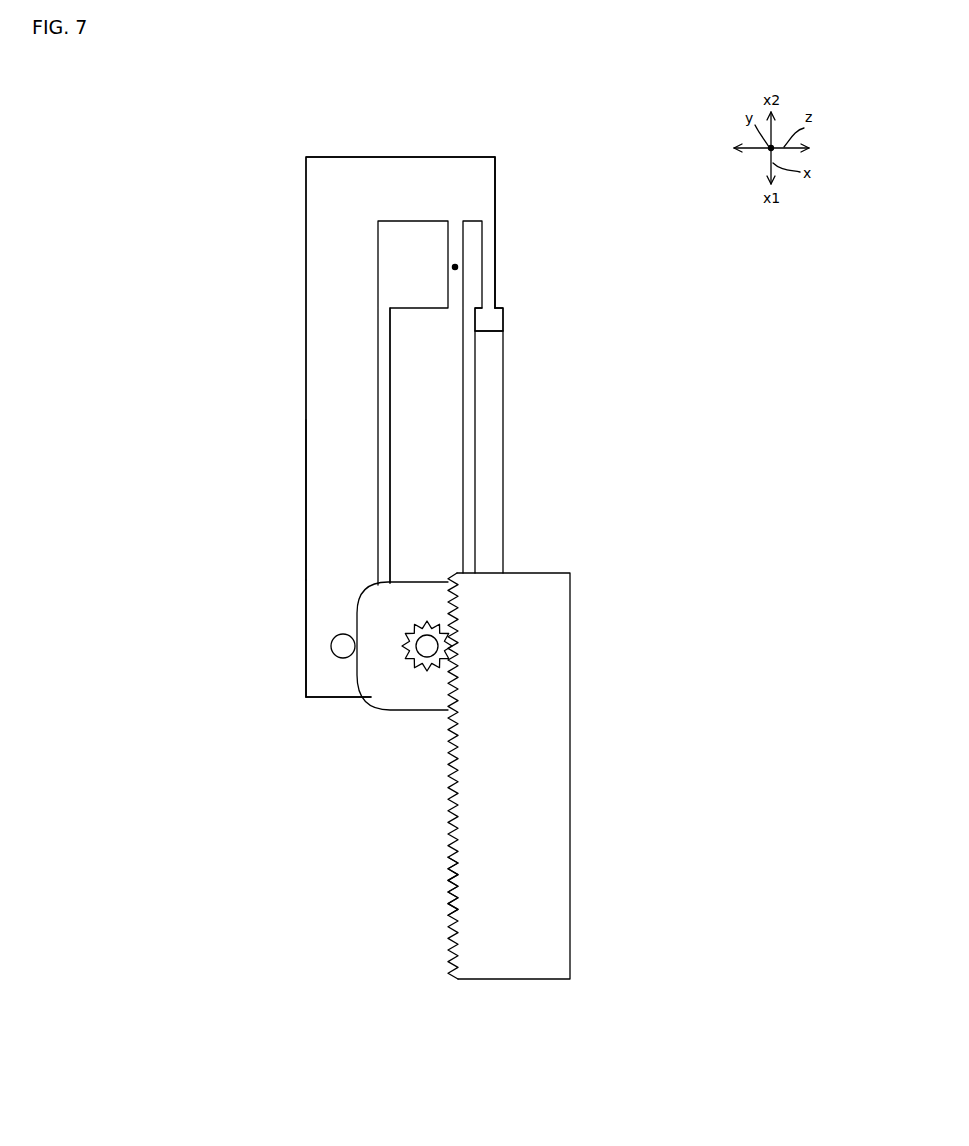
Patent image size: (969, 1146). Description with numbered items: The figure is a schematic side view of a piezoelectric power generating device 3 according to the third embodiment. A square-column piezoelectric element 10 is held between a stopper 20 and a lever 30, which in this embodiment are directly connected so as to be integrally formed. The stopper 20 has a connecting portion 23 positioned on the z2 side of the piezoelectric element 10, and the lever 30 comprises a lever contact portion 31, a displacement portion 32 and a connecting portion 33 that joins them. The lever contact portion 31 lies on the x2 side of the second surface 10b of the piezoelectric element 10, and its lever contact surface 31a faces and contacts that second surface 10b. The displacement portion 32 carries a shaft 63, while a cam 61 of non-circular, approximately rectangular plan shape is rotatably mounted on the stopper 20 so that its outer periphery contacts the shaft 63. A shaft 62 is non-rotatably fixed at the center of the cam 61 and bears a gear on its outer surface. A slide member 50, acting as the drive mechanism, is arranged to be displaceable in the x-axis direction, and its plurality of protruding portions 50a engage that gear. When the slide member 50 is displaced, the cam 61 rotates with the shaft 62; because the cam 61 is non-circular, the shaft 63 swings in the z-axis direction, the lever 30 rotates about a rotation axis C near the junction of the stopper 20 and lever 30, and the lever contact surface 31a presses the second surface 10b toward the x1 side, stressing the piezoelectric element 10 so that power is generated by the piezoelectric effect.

The piezoelectric power generating device 3 is at (549, 115).
The lever 30 is at (306, 326).
The lever contact portion 31 is at (497, 267).
The displacement portion 32 is at (306, 624).
The connecting portion 33 is at (306, 498).
The stopper 20 is at (389, 398).
The connecting portion 23 is at (390, 420).
The piezoelectric element 10 is at (505, 455).
The second surface 10b is at (491, 329).
The lever contact surface 31a is at (483, 333).
The rotation axis C is at (455, 267).
The cam 61 is at (400, 710).
The shaft 62 is at (406, 655).
The shaft 63 is at (331, 648).
The slide member 50 is at (571, 790).
The protruding portions 50a is at (448, 892).